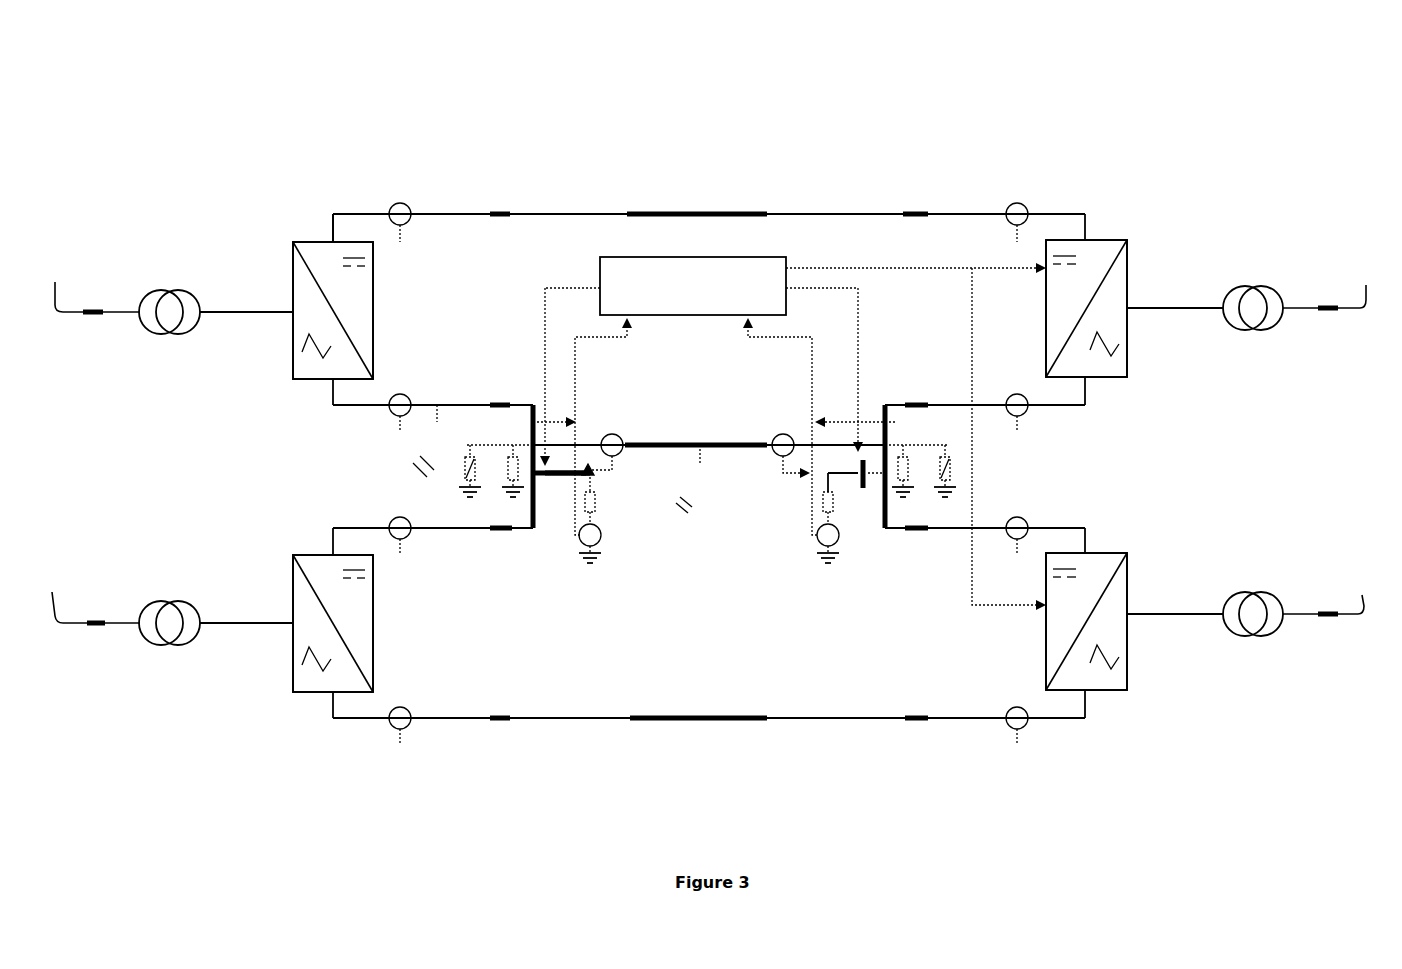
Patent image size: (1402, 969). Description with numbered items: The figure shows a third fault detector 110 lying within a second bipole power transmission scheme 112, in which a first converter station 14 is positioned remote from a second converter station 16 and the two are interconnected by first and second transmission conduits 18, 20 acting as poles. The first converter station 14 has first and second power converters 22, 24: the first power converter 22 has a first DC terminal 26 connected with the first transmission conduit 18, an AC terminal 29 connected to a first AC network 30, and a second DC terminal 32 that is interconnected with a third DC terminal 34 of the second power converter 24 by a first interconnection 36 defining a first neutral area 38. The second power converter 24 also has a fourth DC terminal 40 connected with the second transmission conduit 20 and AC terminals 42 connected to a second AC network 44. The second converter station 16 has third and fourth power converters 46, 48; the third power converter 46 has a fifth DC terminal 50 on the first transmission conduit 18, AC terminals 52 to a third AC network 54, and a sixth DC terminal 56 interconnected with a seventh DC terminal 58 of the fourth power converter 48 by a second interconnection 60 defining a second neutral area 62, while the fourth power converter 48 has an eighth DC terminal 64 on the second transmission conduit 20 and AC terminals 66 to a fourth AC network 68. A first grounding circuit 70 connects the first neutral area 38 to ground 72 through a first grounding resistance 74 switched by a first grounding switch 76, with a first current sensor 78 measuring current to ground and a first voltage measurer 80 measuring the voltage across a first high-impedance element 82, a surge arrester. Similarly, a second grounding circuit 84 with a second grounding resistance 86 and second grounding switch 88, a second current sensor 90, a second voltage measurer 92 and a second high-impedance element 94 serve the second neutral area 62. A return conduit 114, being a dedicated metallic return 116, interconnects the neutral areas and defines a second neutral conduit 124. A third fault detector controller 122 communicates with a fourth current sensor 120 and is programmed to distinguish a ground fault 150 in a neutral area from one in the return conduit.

The second bipole power transmission scheme 112 is at (210, 115).
The first converter station 14 is at (330, 143).
The second converter station 16 is at (1023, 134).
The first transmission conduit 18 is at (690, 212).
The second transmission conduit 20 is at (680, 720).
The first power converter 22 is at (290, 285).
The second power converter 24 is at (295, 593).
The first DC terminal 26 is at (329, 240).
The AC terminal of first converter 29 is at (293, 312).
The first AC network 30 is at (115, 297).
The second DC terminal 32 is at (330, 380).
The third DC terminal 34 is at (329, 555).
The first interconnection 36 is at (348, 406).
The first neutral area 38 is at (425, 480).
The fourth DC terminal 40 is at (330, 696).
The AC terminals 42 is at (290, 624).
The second AC network 44 is at (114, 607).
The third power converter 46 is at (1128, 286).
The fourth power converter 48 is at (1128, 596).
The fifth DC terminal 50 is at (1087, 240).
The AC terminals 52 is at (1128, 309).
The third AC network 54 is at (1299, 293).
The sixth DC terminal 56 is at (1090, 378).
The seventh DC terminal 58 is at (1093, 553).
The second interconnection 60 is at (1065, 420).
The second neutral area 62 is at (1013, 480).
The eighth DC terminal 64 is at (1089, 694).
The AC terminals 66 is at (1131, 615).
The fourth AC network 68 is at (1304, 605).
The first grounding circuit 70 is at (622, 518).
The ground 72 is at (592, 576).
The first grounding resistance 74 is at (602, 515).
The first grounding switch 76 is at (552, 473).
The first current sensor 78 is at (603, 544).
The first voltage measurer 80 is at (511, 482).
The first high-impedance element 82 is at (461, 471).
The second grounding circuit 84 is at (768, 520).
The second grounding resistance 86 is at (815, 505).
The second grounding switch 88 is at (866, 490).
The second current sensor 90 is at (815, 548).
The second voltage measurer 92 is at (908, 470).
The second high-impedance element 94 is at (952, 463).
The third fault detector 110 is at (626, 232).
The return conduit 114 is at (610, 437).
The dedicated metallic return 116 is at (708, 474).
The fourth current sensor 120 is at (772, 434).
The third fault detector controller 122 is at (710, 300).
The second neutral conduit 124 is at (709, 445).
The ground fault 150 is at (437, 425).